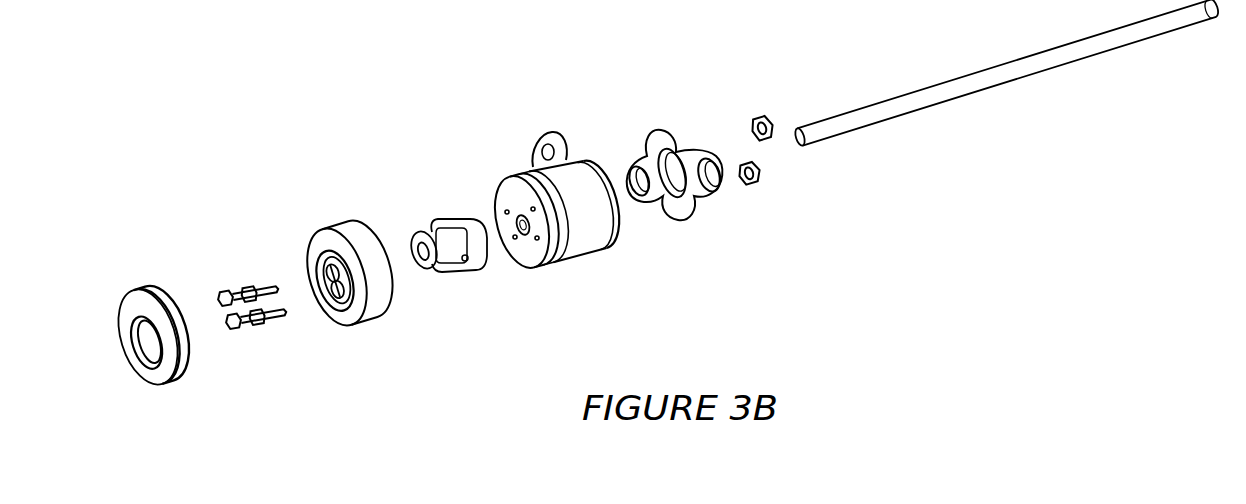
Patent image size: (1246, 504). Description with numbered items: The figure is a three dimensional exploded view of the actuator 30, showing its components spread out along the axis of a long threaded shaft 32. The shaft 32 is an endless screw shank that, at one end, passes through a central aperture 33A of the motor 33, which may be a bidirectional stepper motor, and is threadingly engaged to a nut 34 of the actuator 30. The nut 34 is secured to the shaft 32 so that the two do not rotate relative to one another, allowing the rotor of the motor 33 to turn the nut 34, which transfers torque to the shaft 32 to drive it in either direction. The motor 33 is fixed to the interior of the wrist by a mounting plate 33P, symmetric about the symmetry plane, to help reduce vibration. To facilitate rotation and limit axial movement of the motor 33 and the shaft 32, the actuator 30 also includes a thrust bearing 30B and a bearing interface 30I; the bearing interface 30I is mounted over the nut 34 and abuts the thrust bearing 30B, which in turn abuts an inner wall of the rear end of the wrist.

The actuator 30 is at (228, 160).
The thrust bearing 30B is at (160, 297).
The bearing interface 30I is at (365, 246).
The nut 34 is at (443, 247).
The motor 33 is at (596, 223).
The central aperture 33A is at (523, 222).
The mounting plate 33P is at (668, 148).
The shaft 32 is at (862, 115).